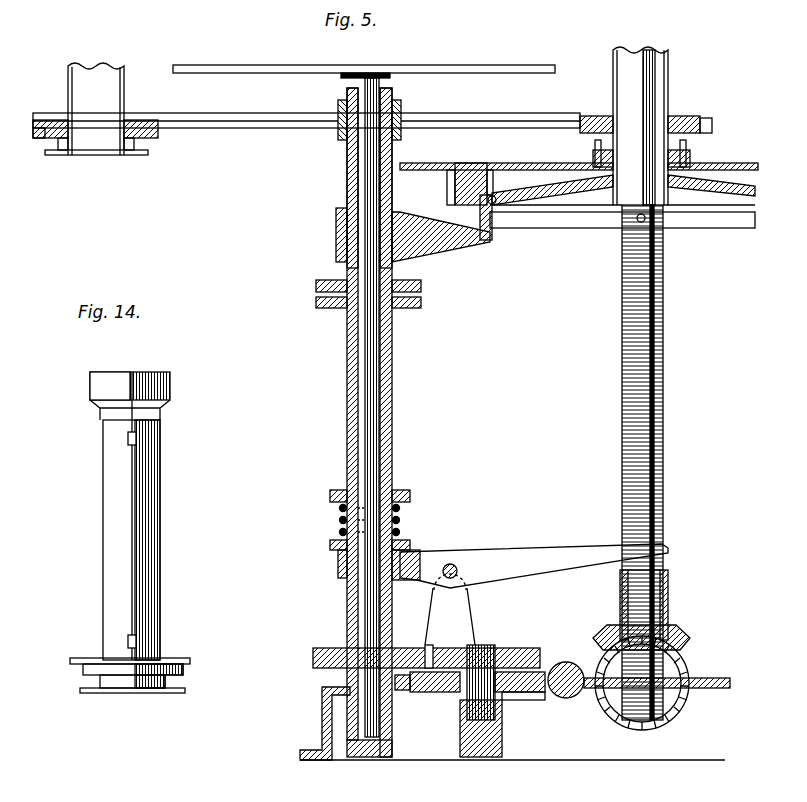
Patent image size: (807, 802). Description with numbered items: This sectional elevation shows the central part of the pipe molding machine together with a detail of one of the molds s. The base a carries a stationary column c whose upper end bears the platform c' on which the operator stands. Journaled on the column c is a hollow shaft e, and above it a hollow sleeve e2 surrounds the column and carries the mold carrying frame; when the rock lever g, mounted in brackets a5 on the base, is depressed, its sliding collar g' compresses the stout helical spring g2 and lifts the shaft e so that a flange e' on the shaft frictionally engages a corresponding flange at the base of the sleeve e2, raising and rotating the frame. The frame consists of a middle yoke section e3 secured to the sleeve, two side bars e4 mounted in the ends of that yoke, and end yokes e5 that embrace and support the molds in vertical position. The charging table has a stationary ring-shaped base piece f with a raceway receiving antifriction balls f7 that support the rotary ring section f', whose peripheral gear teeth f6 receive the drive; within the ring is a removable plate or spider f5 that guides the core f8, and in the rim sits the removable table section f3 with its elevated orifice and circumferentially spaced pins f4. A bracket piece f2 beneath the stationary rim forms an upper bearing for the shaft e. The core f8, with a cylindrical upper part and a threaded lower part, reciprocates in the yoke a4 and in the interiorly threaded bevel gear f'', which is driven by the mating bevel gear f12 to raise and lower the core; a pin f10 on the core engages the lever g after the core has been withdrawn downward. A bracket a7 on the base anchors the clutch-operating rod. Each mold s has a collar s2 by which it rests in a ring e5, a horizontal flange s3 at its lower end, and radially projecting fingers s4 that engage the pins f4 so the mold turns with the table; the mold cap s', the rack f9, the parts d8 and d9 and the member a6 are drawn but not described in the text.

In FIG. 5, the platform c' is at (364, 59).
In FIG. 5, the hollow shaft e is at (384, 422).
In FIG. 5, the hollow sleeve e2 is at (347, 190).
In FIG. 5, the stationary column c is at (390, 407).
In FIG. 5, the middle yoke section e3 is at (401, 112).
In FIG. 5, the side arms or bars e4 is at (288, 108).
In FIG. 5, the mold s is at (380, 126).
In FIG. 14, the mold s is at (137, 516).
In FIG. 5, the collar s2 is at (136, 120).
In FIG. 14, the collar s2 is at (165, 660).
In FIG. 5, the horizontal flange s3 is at (132, 155).
In FIG. 14, the horizontal flange s3 is at (150, 693).
In FIG. 5, the radially projecting fingers s4 is at (140, 152).
In FIG. 14, the radially projecting fingers s4 is at (175, 689).
In FIG. 5, the end yoke e5 is at (42, 138).
In FIG. 5, the core f8 is at (648, 94).
In FIG. 5, the rack f9 is at (663, 338).
In FIG. 5, the pins f4 is at (593, 160).
In FIG. 5, the rotary ring section f' is at (579, 169).
In FIG. 5, the removable table section f3 is at (494, 168).
In FIG. 5, the gear teeth f6 is at (447, 192).
In FIG. 5, the antifriction rollers or balls f7 is at (505, 196).
In FIG. 5, the ring-shaped base piece f is at (493, 224).
In FIG. 5, the removable plate or spider f5 is at (622, 201).
In FIG. 5, the pin f10 is at (640, 222).
In FIG. 5, the bracket piece f2 is at (336, 248).
In FIG. 5, the flange e' is at (385, 294).
In FIG. 5, the helical spring g2 is at (401, 518).
In FIG. 5, the sliding collar g' is at (387, 547).
In FIG. 5, the rock lever g is at (534, 554).
In FIG. 5, the brackets a5 is at (472, 615).
In FIG. 5, the base a is at (322, 718).
In FIG. 5, the plate d8 is at (484, 648).
In FIG. 5, the pin d9 is at (426, 650).
In FIG. 5, the bracket a7 is at (520, 648).
In FIG. 5, the bar a6 is at (548, 692).
In FIG. 5, the yoke a4 is at (570, 662).
In FIG. 5, the interiorly threaded bevel gear f'' is at (654, 627).
In FIG. 5, the mating bevel gear f12 is at (692, 668).
In FIG. 14, the cap s' is at (145, 396).